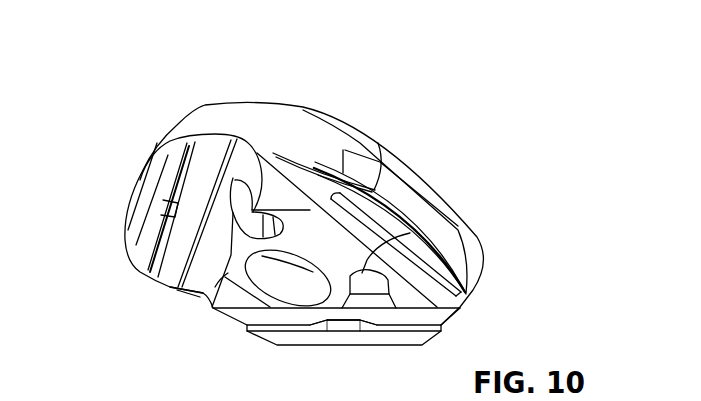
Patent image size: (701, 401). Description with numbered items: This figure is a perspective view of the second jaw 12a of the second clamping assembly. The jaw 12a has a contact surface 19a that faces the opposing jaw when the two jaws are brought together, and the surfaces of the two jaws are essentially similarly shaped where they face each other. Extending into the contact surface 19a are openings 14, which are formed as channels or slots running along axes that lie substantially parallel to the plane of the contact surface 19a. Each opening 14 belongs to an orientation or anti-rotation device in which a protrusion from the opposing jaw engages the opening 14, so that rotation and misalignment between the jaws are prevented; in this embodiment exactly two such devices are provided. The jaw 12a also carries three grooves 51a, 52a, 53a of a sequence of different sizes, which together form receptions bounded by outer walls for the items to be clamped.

The jaw 12a is at (468, 250).
The opening 14 is at (234, 146).
The contact surface 19a is at (307, 240).
The groove 51a is at (338, 333).
The groove 52a is at (158, 189).
The groove 53a is at (383, 166).